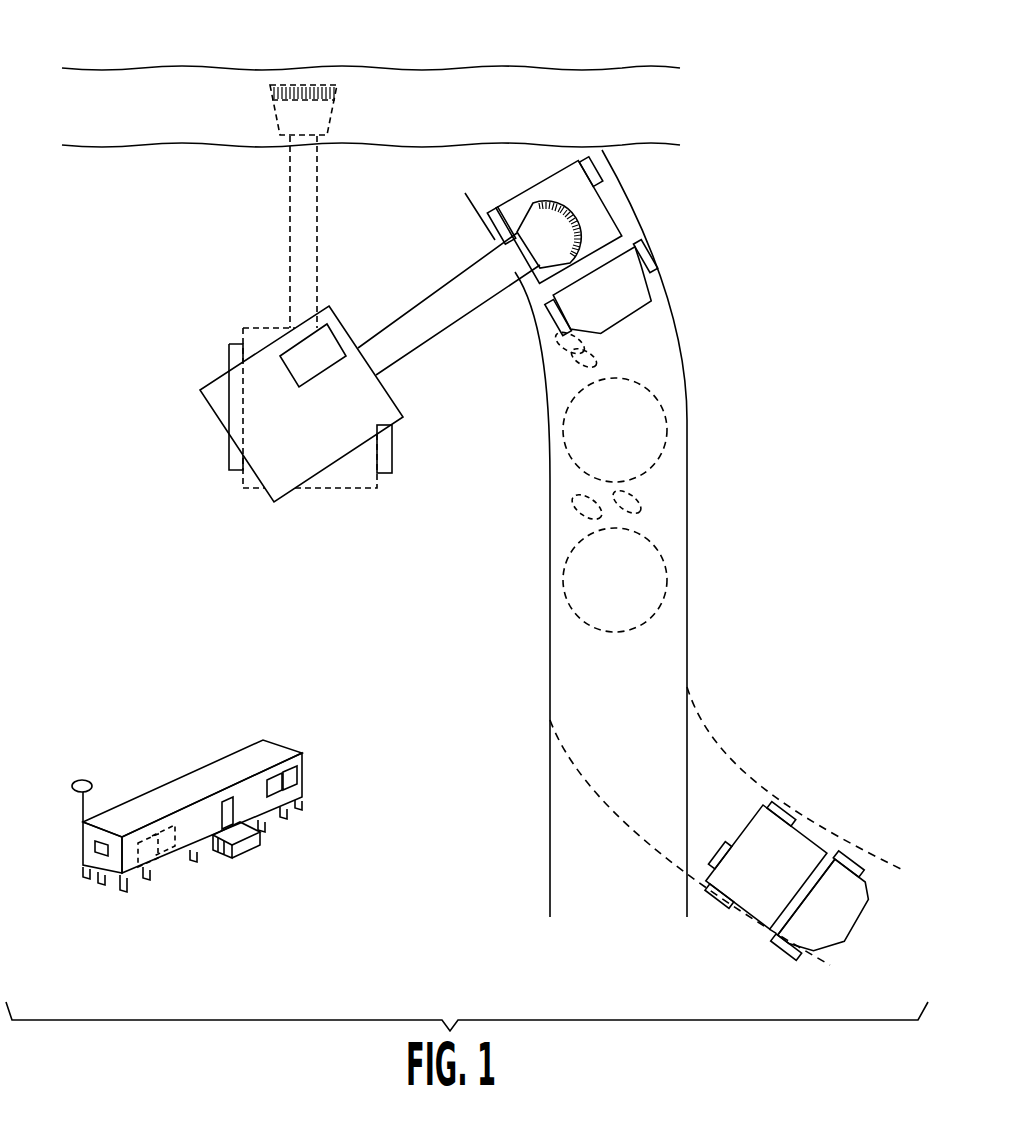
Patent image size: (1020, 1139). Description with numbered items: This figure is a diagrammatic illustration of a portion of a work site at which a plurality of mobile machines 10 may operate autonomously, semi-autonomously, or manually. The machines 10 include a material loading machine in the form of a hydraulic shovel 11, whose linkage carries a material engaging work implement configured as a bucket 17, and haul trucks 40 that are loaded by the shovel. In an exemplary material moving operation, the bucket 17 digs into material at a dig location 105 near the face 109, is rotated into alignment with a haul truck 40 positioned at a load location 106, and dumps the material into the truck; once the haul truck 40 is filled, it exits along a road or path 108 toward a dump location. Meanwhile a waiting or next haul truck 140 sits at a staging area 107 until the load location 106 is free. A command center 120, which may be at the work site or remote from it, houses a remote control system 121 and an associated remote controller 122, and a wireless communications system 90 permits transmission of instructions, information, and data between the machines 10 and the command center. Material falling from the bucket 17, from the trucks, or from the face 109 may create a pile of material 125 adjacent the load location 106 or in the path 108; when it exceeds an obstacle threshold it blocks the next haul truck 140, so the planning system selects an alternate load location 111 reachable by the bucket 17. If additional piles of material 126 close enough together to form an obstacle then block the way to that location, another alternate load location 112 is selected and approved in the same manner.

The mobile machine 10 is at (152, 410).
The hydraulic shovel 11 is at (206, 343).
The bucket 17 is at (538, 225).
The haul truck 40 is at (636, 216).
The wireless communications system 90 is at (72, 754).
The dig location 105 is at (246, 173).
The load location 106 is at (527, 157).
The staging area 107 is at (812, 802).
The path 108 is at (573, 842).
The face 109 is at (457, 87).
The alternate load location 111 is at (663, 433).
The alternate load location 112 is at (660, 573).
The command center 120 is at (178, 787).
The remote control system 121 is at (290, 717).
The remote controller 122 is at (160, 863).
The pile of material 125 is at (583, 353).
The pile of material 126 is at (617, 493).
The next haul truck 140 is at (757, 923).